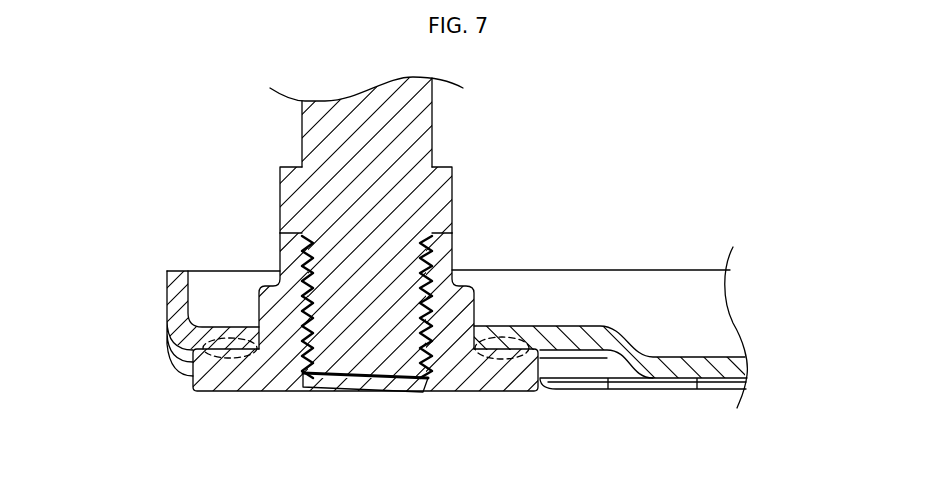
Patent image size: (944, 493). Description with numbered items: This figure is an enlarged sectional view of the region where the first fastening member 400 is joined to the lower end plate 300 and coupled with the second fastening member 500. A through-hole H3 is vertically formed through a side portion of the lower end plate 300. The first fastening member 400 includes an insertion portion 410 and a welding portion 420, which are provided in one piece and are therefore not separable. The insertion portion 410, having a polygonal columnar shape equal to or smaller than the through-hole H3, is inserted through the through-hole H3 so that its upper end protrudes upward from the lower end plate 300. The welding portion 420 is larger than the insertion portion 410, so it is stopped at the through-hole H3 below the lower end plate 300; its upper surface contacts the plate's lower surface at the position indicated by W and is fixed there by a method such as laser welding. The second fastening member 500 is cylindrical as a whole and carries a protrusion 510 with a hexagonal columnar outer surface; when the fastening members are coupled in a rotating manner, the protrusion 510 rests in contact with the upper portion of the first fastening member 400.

The second fastening member 500 is at (461, 139).
The protrusion 510 is at (281, 190).
The first fastening member 400 is at (472, 246).
The insertion portion 410 is at (272, 315).
The welding portion 420 is at (283, 435).
The lower end plate 300 is at (593, 326).
The welding position W is at (232, 341).
The through-hole H3 is at (478, 320).